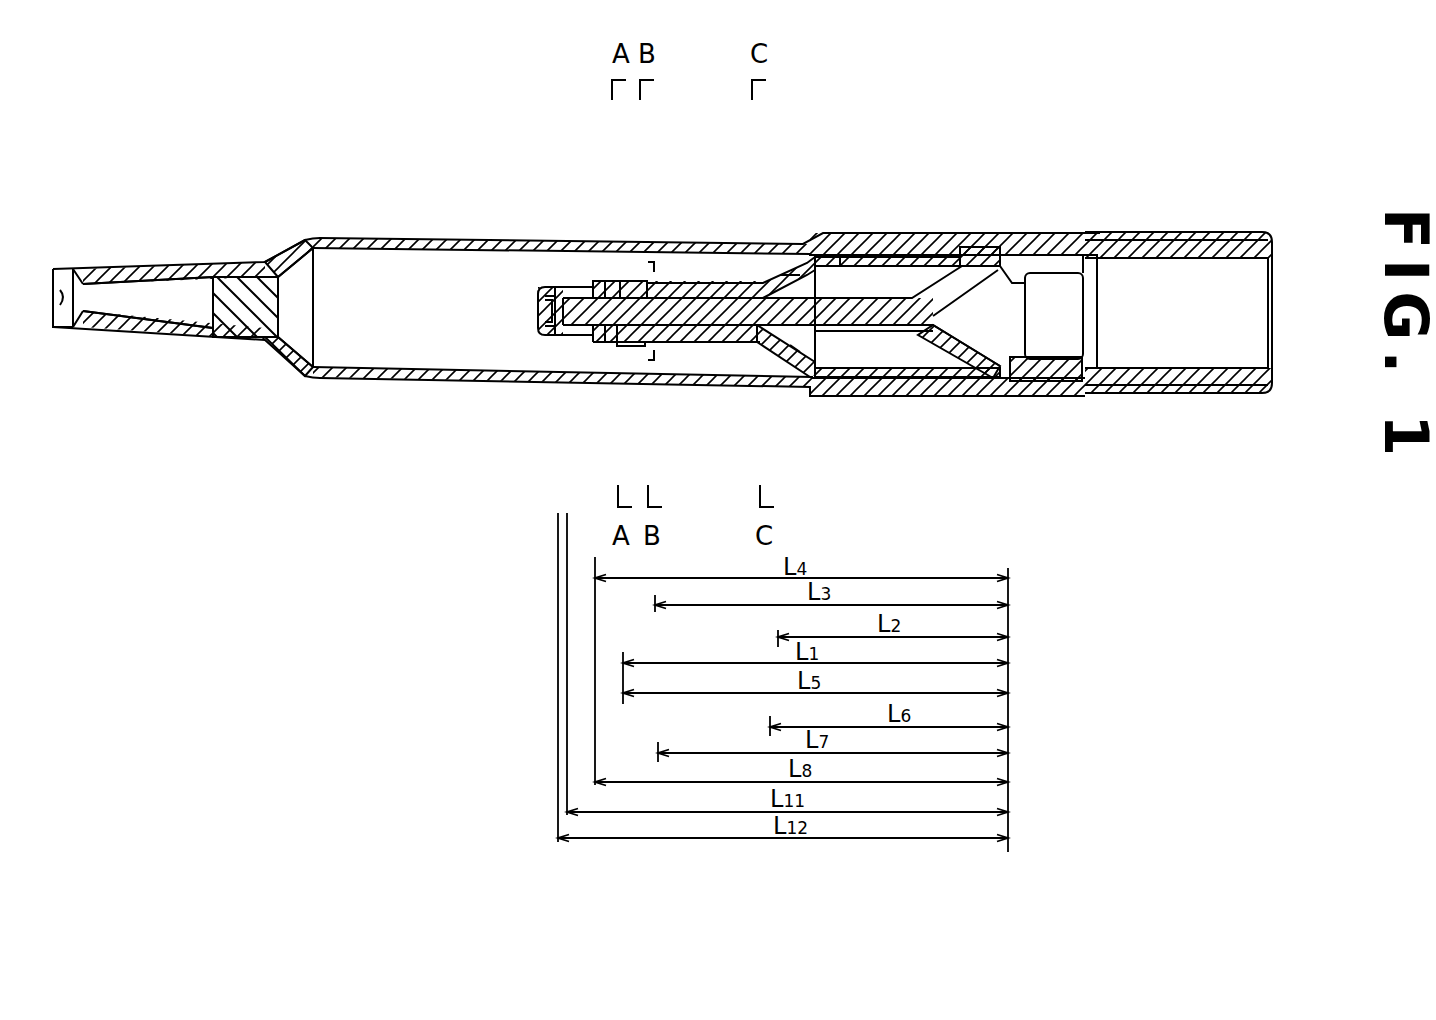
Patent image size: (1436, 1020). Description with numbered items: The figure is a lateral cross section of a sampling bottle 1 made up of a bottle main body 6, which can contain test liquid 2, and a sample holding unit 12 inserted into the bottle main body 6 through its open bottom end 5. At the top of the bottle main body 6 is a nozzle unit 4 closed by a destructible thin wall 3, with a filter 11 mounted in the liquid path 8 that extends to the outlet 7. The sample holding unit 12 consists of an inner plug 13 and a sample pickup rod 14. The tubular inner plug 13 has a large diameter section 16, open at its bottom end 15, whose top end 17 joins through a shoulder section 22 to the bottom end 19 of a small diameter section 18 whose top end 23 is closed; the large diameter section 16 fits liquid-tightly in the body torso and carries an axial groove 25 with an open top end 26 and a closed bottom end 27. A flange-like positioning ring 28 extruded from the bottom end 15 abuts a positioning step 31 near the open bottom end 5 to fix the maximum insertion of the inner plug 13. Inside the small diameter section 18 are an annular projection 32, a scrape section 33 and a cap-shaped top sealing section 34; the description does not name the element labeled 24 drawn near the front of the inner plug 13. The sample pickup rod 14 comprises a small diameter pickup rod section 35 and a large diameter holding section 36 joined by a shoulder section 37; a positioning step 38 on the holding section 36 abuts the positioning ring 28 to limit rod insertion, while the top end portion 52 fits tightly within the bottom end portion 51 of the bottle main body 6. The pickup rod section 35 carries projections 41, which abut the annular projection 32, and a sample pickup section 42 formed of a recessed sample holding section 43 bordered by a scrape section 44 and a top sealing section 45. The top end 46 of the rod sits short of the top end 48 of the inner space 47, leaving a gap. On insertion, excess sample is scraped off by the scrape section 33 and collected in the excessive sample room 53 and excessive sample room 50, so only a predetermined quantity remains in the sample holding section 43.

The sampling bottle 1 is at (885, 173).
The test liquid 2 is at (400, 240).
The thin wall 3 is at (117, 333).
The nozzle unit 4 is at (141, 266).
The open bottom end 5 is at (1083, 237).
The bottle main body 6 is at (684, 250).
The outlet 7 is at (67, 320).
The liquid path 8 is at (199, 280).
The filter 11 is at (237, 276).
The sample holding unit 12 is at (862, 355).
The inner plug 13 is at (892, 240).
The sample pickup rod 14 is at (858, 308).
The bottom end 15 is at (1040, 255).
The large diameter section 16 is at (948, 240).
The top end 17 is at (823, 267).
The small diameter section 18 is at (670, 268).
The bottom end 19 is at (760, 282).
The shoulder section 22 is at (790, 272).
The top end 23 is at (537, 312).
The upper sleeve shoulder 24 is at (587, 273).
The groove 25 is at (920, 250).
The top end 26 is at (812, 380).
The bottom end 27 is at (987, 380).
The positioning ring 28 is at (1003, 240).
The positioning step 31 is at (980, 250).
The annular projection 32 is at (767, 347).
The scrape section 33 is at (640, 343).
The top sealing section 34 is at (597, 340).
The small diameter pickup rod section 35 is at (712, 296).
The large diameter holding section 36 is at (1163, 250).
The shoulder section 37 is at (951, 378).
The positioning step 38 is at (1007, 393).
The projections 41 is at (768, 348).
The sample pickup section 42 is at (612, 348).
The sample holding section 43 is at (602, 280).
The scrape section 44 is at (632, 267).
The top sealing section 45 is at (533, 273).
The top end 46 is at (560, 335).
The inner space 47 is at (442, 268).
The top end 48 is at (550, 332).
The excessive sample room 50 is at (803, 340).
The bottom end portion 51 is at (1062, 240).
The top end portion 52 is at (1123, 235).
The excessive sample room 53 is at (690, 345).